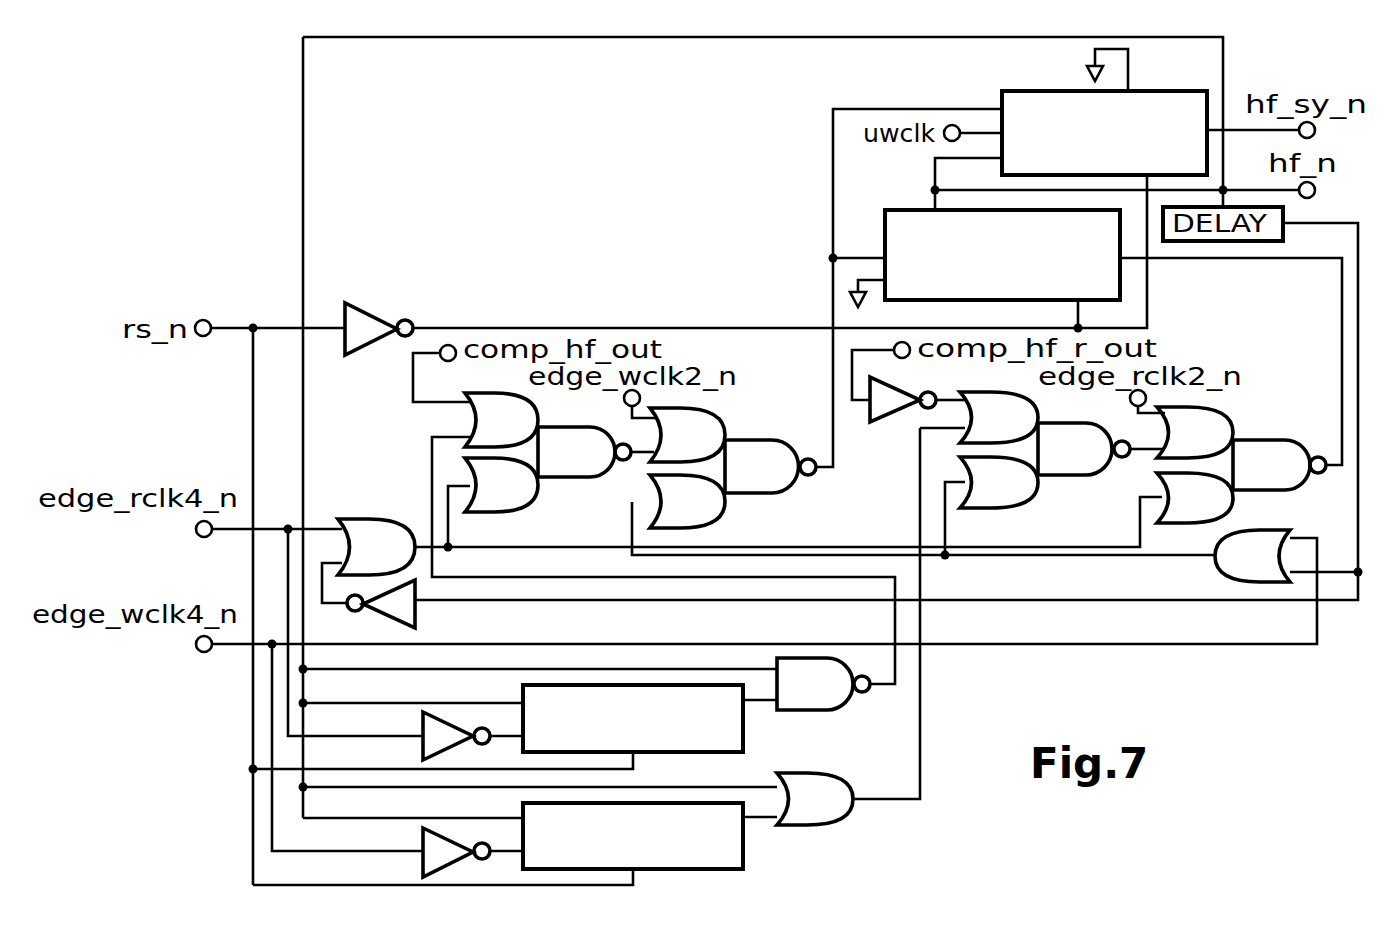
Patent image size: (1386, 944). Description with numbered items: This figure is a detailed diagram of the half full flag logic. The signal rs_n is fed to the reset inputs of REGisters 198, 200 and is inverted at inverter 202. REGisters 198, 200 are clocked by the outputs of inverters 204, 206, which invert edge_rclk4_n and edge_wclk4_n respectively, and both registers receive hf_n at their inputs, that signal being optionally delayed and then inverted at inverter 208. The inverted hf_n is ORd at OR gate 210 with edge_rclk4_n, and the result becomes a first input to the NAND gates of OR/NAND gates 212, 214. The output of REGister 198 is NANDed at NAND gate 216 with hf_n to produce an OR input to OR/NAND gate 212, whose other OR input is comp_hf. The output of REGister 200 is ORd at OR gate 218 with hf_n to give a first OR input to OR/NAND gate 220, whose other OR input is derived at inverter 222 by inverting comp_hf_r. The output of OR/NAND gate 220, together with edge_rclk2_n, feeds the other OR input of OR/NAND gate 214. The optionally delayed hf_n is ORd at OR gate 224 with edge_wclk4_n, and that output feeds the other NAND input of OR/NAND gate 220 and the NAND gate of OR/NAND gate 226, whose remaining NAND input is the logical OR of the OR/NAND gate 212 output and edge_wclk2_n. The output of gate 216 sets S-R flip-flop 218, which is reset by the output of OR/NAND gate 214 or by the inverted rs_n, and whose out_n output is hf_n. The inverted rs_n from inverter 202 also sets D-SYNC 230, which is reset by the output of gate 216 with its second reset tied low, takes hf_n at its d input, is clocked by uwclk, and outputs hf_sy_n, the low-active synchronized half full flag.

The REGister 198 is at (743, 745).
The REGister 200 is at (743, 860).
The inverter 202 is at (377, 318).
The inverter 204 is at (423, 716).
The inverter 206 is at (423, 868).
The inverter 208 is at (417, 622).
The OR gate 210 is at (395, 518).
The OR/NAND gate 212 is at (537, 499).
The OR/NAND gate 214 is at (1253, 428).
The NAND gate 216 is at (825, 712).
The S-R flip-flop 218 is at (884, 225).
The OR/NAND gate 220 is at (1040, 501).
The inverter 222 is at (897, 416).
The OR gate 224 is at (1227, 572).
The OR/NAND gate 226 is at (743, 502).
The D-SYNC 230 is at (1060, 91).